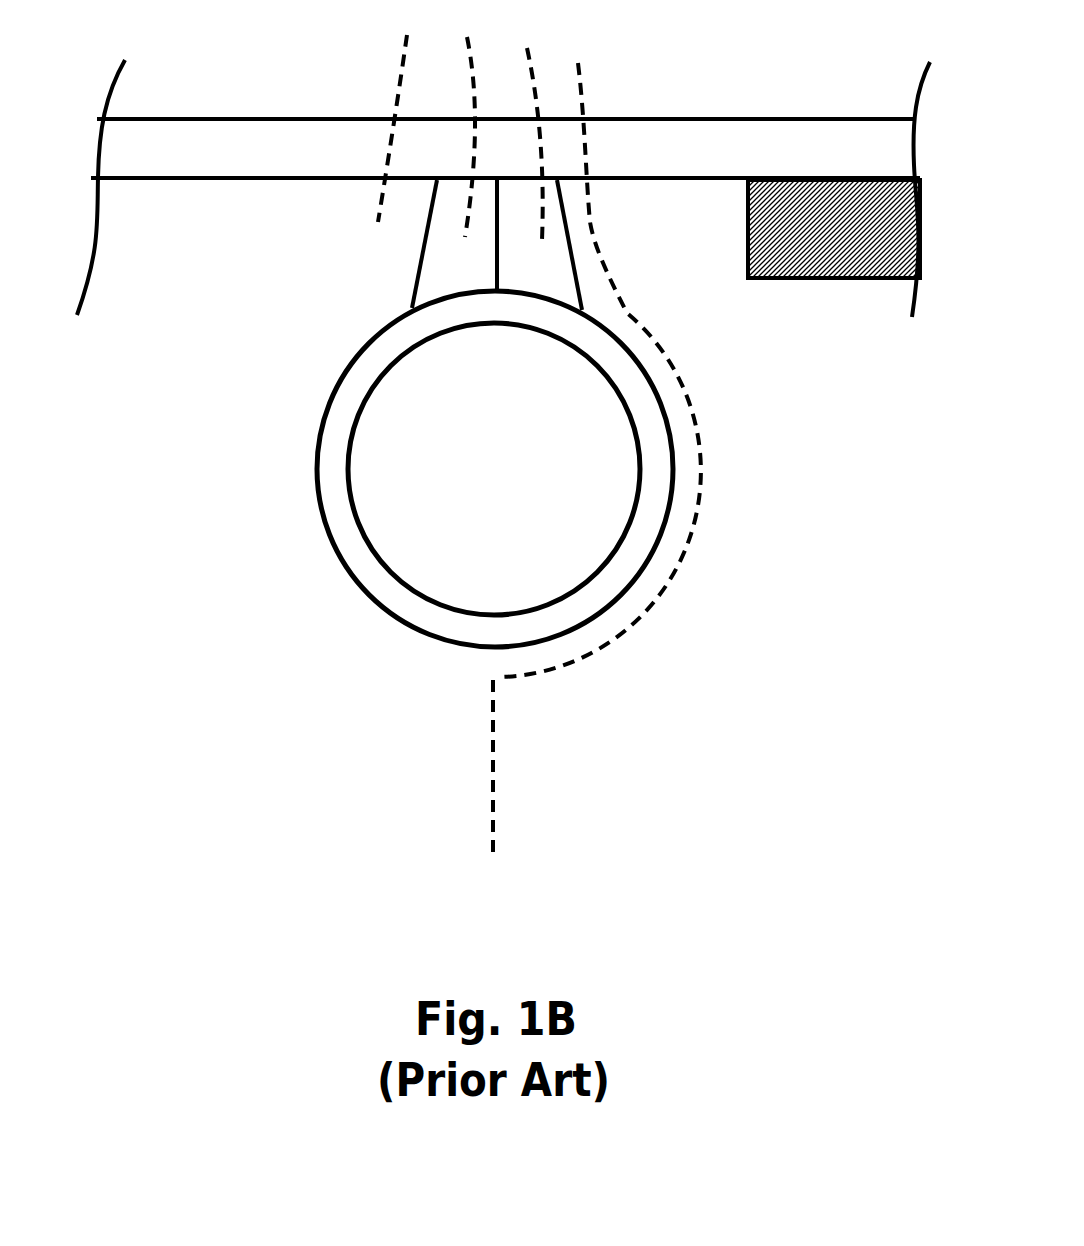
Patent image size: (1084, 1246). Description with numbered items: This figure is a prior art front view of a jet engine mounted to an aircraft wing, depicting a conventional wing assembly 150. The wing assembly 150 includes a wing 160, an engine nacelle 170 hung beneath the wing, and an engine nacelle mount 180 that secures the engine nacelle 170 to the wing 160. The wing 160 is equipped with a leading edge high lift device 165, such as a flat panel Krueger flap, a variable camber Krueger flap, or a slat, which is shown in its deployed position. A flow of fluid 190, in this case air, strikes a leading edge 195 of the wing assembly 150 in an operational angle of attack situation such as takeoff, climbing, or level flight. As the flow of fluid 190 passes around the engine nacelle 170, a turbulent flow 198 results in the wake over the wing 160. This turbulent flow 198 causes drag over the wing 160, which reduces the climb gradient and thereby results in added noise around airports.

The wing assembly 150 is at (252, 663).
The wing 160 is at (287, 182).
The leading edge high lift device 165 is at (817, 217).
The engine nacelle 170 is at (320, 420).
The engine nacelle mount 180 is at (410, 297).
The flow of fluid 190 is at (532, 830).
The leading edge 195 is at (487, 660).
The turbulent flow 198 is at (640, 270).